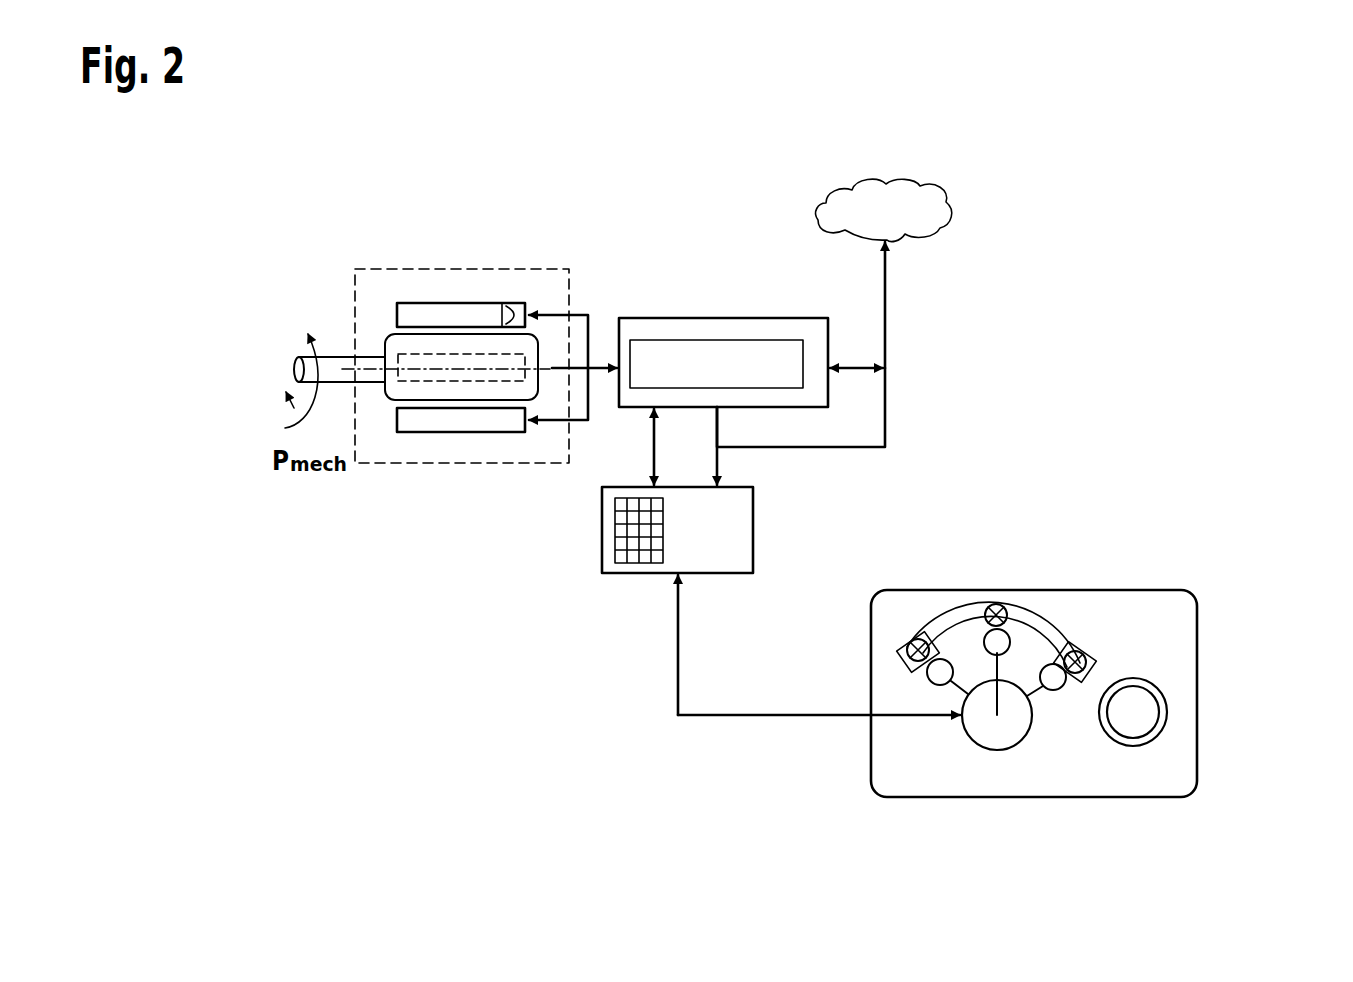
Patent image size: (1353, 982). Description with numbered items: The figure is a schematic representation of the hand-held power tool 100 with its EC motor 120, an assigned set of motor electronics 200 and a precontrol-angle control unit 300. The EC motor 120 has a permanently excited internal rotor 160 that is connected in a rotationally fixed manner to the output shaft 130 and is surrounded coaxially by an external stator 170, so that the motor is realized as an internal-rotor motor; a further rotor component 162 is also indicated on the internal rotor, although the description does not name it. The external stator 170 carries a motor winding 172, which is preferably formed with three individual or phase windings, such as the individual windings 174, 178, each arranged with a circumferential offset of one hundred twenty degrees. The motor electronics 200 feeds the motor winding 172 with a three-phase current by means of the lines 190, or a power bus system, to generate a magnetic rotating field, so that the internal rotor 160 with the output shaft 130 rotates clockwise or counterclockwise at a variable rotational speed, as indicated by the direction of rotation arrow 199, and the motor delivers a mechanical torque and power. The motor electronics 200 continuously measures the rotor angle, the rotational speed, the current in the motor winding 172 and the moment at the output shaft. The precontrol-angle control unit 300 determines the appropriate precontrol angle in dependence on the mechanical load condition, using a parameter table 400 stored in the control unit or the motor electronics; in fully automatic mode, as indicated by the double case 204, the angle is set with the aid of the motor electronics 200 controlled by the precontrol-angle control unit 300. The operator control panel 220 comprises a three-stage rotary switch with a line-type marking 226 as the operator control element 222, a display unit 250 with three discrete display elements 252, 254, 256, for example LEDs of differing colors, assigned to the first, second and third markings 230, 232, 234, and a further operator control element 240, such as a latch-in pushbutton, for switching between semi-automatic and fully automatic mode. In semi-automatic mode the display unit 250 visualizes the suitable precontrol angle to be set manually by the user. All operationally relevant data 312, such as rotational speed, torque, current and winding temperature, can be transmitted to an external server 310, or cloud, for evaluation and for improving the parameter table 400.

The hand-held power tool 100 is at (555, 656).
The EC motor 120 is at (498, 268).
The output shaft 130 is at (295, 367).
The internal rotor 160 is at (429, 333).
The rotor magnets 162 is at (473, 380).
The external stator 170 is at (377, 465).
The motor winding 172 is at (455, 302).
The individual winding 174 is at (396, 318).
The individual winding 178 is at (430, 433).
The lines 190 is at (590, 348).
The direction of rotation arrow 199 is at (286, 428).
The motor electronics 200 is at (665, 317).
The double case 204 is at (651, 450).
The operator control panel 220 is at (1165, 589).
The operator control element 222 is at (975, 745).
The line-type marking 226 is at (1003, 720).
The first marking 230 is at (917, 645).
The second marking 232 is at (997, 604).
The third marking 234 is at (1072, 651).
The further operator control element 240 is at (1133, 715).
The display unit 250 is at (1103, 665).
The first display element 252 is at (941, 658).
The second display element 254 is at (998, 644).
The third display element 256 is at (1053, 663).
The precontrol-angle control unit 300 is at (598, 574).
The external server 310 is at (930, 198).
The operationally relevant data 312 is at (752, 339).
The parameter table 400 is at (645, 566).